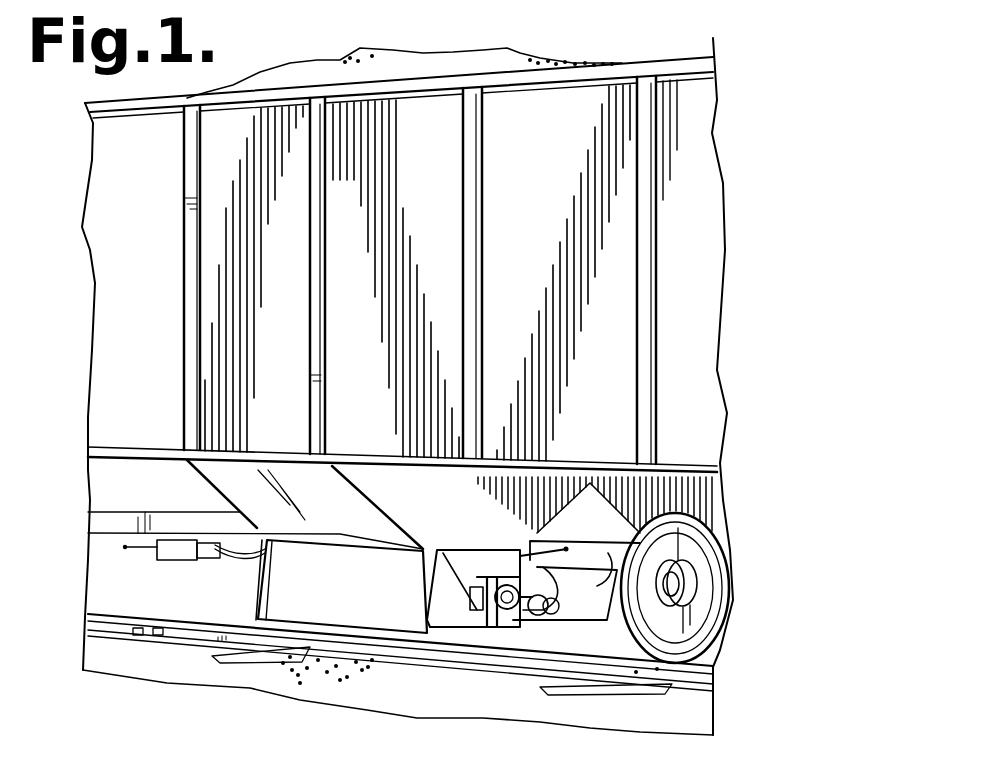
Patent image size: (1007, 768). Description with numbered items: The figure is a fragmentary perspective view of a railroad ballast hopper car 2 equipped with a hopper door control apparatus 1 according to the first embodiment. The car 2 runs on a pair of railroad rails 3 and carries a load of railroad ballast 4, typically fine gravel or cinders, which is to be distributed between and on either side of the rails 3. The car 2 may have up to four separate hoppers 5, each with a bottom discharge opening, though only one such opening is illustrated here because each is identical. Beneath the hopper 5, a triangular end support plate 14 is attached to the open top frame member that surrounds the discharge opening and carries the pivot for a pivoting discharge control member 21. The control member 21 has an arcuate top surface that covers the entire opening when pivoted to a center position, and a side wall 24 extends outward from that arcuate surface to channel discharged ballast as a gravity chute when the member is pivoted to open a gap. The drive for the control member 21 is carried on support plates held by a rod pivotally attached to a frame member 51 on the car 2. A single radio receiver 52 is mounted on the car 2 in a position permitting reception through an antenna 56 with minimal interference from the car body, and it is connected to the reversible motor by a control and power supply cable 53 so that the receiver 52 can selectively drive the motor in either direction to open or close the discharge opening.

The hopper door control apparatus 1 is at (458, 633).
The railroad ballast hopper car 2 is at (95, 278).
The railroad rails 3 is at (163, 638).
The railroad ballast 4 is at (427, 52).
The hopper 5 is at (555, 100).
The end support plate 14 is at (468, 574).
The pivoting discharge control member 21 is at (262, 598).
The side wall 24 is at (350, 603).
The frame member 51 is at (608, 553).
The radio receiver 52 is at (183, 553).
The control and power supply cable 53 is at (248, 555).
The antenna 56 is at (137, 547).